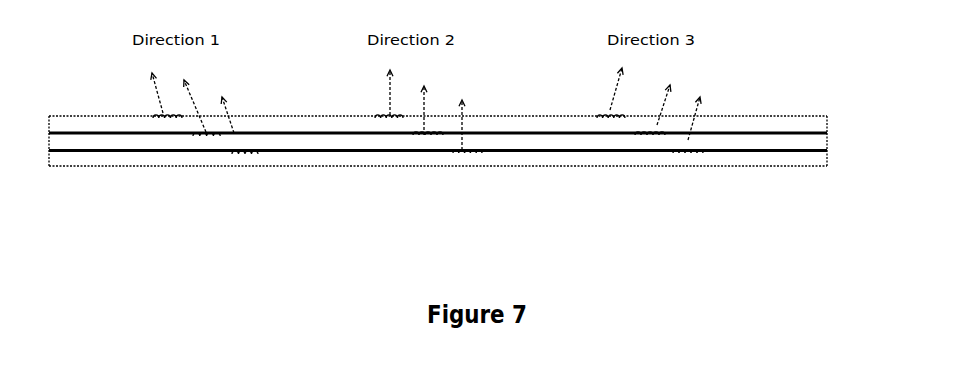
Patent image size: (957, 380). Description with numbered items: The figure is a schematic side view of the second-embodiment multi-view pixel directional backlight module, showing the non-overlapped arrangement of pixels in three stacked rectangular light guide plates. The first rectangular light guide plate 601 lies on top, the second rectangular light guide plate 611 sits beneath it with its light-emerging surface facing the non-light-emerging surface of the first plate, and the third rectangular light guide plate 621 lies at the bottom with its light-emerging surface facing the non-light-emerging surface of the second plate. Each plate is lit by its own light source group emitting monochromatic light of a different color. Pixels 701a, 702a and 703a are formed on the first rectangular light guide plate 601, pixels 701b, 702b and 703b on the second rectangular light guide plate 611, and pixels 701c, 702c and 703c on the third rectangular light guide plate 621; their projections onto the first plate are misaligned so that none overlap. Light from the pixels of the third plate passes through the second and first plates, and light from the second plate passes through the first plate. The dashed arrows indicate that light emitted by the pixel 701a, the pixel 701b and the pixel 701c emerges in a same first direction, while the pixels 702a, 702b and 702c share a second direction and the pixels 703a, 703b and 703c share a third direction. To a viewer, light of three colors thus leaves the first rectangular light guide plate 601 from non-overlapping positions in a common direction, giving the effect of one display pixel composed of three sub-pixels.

The first rectangular light guide plate 601 is at (829, 122).
The second rectangular light guide plate 611 is at (820, 136).
The third rectangular light guide plate 621 is at (815, 158).
The pixel 701a is at (157, 113).
The pixel 701b is at (209, 132).
The pixel 701c is at (247, 157).
The pixel 702a is at (379, 115).
The pixel 702b is at (440, 133).
The pixel 702c is at (467, 155).
The pixel 703a is at (601, 115).
The pixel 703b is at (645, 133).
The pixel 703c is at (690, 155).